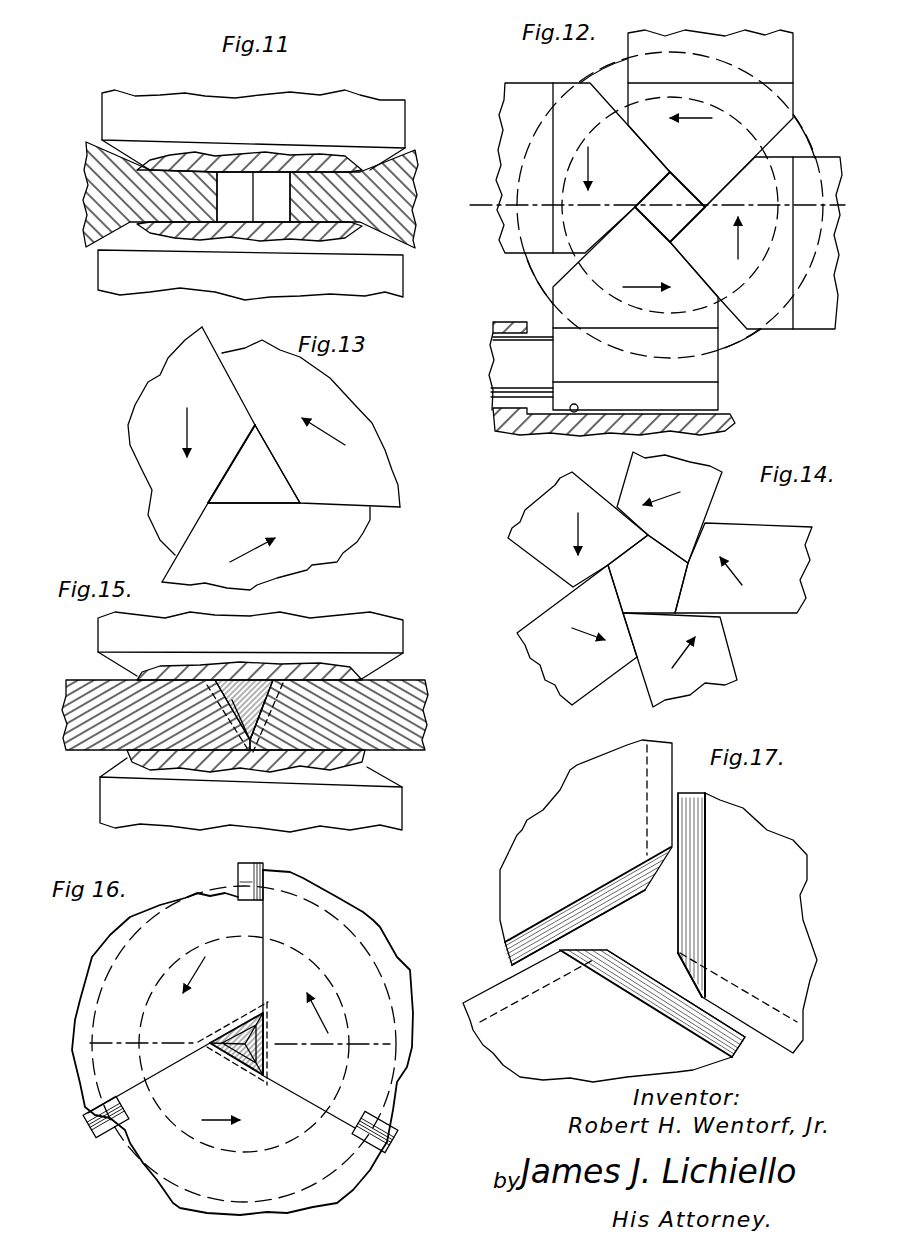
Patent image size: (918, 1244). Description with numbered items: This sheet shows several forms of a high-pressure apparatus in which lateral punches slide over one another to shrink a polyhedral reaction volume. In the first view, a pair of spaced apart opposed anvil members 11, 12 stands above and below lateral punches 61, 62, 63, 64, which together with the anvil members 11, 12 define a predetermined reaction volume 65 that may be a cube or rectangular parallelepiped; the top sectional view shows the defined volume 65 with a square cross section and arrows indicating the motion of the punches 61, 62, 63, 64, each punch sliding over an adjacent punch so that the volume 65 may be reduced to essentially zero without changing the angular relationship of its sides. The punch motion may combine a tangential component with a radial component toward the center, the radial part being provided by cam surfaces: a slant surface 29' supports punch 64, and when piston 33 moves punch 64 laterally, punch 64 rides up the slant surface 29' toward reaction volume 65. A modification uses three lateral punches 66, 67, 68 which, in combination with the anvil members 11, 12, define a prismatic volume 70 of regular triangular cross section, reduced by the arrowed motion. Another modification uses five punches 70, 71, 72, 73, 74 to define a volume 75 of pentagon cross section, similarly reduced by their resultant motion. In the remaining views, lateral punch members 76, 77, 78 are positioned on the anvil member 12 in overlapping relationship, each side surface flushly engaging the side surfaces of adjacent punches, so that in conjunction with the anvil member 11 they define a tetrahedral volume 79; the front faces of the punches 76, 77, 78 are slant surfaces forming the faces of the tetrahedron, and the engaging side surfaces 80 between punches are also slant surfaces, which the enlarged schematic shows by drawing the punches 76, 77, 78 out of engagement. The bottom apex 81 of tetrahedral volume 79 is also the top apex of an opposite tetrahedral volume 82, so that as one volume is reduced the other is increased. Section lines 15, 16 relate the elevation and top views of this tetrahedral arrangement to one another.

In FIG. 11, the anvil member 11 is at (333, 105).
In FIG. 12, the anvil member 11 is at (476, 173).
In FIG. 15, the anvil member 11 is at (325, 622).
In FIG. 11, the anvil member 12 is at (152, 282).
In FIG. 12, the anvil member 12 is at (657, 205).
In FIG. 15, the anvil member 12 is at (385, 810).
In FIG. 16, the anvil member 12 is at (197, 893).
In FIG. 16, the section line 15- 15 is at (90, 1043).
In FIG. 15, the section line 16- 16 is at (62, 679).
In FIG. 12, the slant surface 29' is at (614, 431).
In FIG. 12, the piston 33 is at (500, 367).
In FIG. 11, the lateral punch 61 is at (155, 200).
In FIG. 12, the lateral punch 61 is at (567, 118).
In FIG. 11, the lateral punch 62 is at (272, 180).
In FIG. 12, the lateral punch 62 is at (762, 117).
In FIG. 11, the lateral punch 63 is at (330, 207).
In FIG. 12, the lateral punch 63 is at (748, 290).
In FIG. 12, the lateral punch 64 is at (575, 292).
In FIG. 11, the reaction volume 65 is at (247, 205).
In FIG. 12, the reaction volume 65 is at (681, 217).
In FIG. 13, the lateral punch 66 is at (163, 405).
In FIG. 13, the lateral punch 67 is at (345, 412).
In FIG. 13, the lateral punch 68 is at (345, 528).
In FIG. 13, the prismatic volume 70 is at (262, 484).
In FIG. 14, the prismatic volume 70 is at (532, 545).
In FIG. 14, the punch 71 is at (628, 472).
In FIG. 14, the punch 72 is at (735, 530).
In FIG. 14, the punch 73 is at (722, 661).
In FIG. 14, the punch 74 is at (594, 683).
In FIG. 14, the volume 75 is at (657, 590).
In FIG. 15, the lateral punch member 76 is at (120, 718).
In FIG. 16, the lateral punch member 76 is at (115, 973).
In FIG. 17, the lateral punch member 76 is at (533, 872).
In FIG. 15, the lateral punch member 77 is at (375, 738).
In FIG. 16, the lateral punch member 77 is at (358, 962).
In FIG. 17, the lateral punch member 77 is at (768, 865).
In FIG. 16, the lateral punch member 78 is at (160, 1150).
In FIG. 17, the lateral punch member 78 is at (553, 1045).
In FIG. 15, the tetrahedral volume 79 is at (242, 695).
In FIG. 16, the tetrahedral volume 79 is at (250, 1025).
In FIG. 16, the slant surfaces 80 is at (240, 876).
In FIG. 17, the slant surfaces 80 is at (687, 890).
In FIG. 15, the bottom apex 81 is at (250, 740).
In FIG. 16, the bottom apex 81 is at (225, 1055).
In FIG. 15, the opposite tetrahedral volume 82 is at (250, 745).